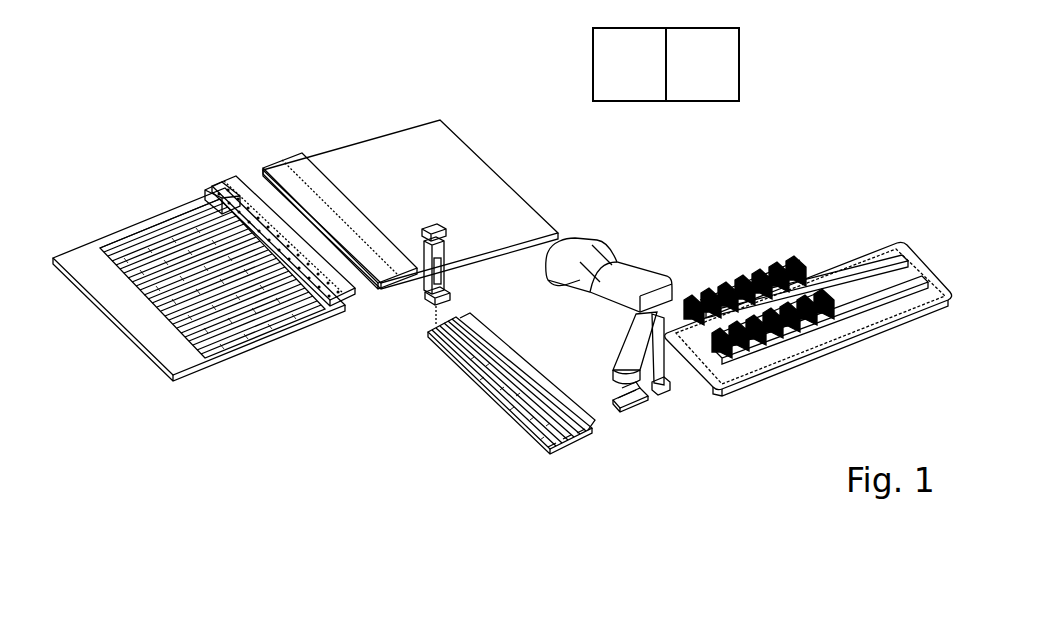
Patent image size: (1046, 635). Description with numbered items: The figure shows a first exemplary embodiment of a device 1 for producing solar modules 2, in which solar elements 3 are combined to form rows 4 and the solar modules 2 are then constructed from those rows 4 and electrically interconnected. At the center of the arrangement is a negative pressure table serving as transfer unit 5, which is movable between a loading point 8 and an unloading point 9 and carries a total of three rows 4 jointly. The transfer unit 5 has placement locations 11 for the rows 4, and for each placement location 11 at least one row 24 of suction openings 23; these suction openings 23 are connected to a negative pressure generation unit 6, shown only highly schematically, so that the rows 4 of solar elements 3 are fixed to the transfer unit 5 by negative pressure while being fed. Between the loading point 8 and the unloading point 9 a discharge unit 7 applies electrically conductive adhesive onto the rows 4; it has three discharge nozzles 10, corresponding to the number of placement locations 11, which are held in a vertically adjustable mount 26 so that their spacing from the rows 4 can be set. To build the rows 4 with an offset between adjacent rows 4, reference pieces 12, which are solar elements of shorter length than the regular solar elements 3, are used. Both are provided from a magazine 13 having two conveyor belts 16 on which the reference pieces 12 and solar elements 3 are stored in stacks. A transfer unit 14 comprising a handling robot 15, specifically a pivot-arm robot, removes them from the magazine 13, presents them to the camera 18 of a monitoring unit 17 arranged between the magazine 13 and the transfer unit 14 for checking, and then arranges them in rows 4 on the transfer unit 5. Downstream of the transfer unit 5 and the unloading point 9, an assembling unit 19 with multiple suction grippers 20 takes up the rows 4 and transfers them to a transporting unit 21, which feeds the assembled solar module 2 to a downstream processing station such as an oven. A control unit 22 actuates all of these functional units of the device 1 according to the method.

The device 1 is at (306, 95).
The solar module 2 is at (170, 216).
The solar elements 3 is at (748, 282).
The rows 4 is at (553, 448).
The transfer unit 5 is at (356, 232).
The negative pressure generation unit 6 is at (666, 64).
The discharge unit 7 is at (434, 240).
The loading point 8 is at (556, 384).
The unloading point 9 is at (332, 190).
The discharge nozzles 10 is at (408, 304).
The placement locations 11 is at (527, 356).
The reference pieces 12 is at (813, 287).
The magazine 13 is at (847, 236).
The transfer unit 14 is at (572, 236).
The handling robot 15 is at (655, 282).
The conveyor belts 16 is at (875, 260).
The monitoring unit 17 is at (684, 432).
The camera 18 is at (660, 395).
The assembling unit 19 is at (226, 194).
The grippers 20 is at (236, 205).
The transporting unit 21 is at (133, 318).
The control unit 22 is at (666, 64).
The suction openings 23 is at (527, 356).
The row of suction openings 24 is at (502, 360).
The vertically adjustable mount 26 is at (433, 181).